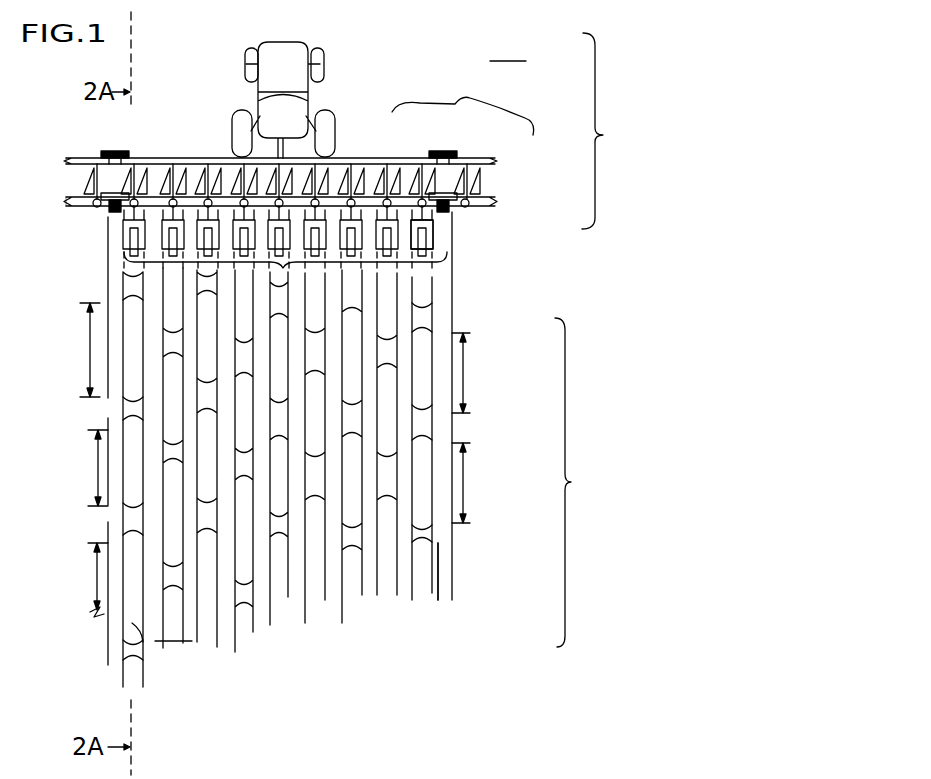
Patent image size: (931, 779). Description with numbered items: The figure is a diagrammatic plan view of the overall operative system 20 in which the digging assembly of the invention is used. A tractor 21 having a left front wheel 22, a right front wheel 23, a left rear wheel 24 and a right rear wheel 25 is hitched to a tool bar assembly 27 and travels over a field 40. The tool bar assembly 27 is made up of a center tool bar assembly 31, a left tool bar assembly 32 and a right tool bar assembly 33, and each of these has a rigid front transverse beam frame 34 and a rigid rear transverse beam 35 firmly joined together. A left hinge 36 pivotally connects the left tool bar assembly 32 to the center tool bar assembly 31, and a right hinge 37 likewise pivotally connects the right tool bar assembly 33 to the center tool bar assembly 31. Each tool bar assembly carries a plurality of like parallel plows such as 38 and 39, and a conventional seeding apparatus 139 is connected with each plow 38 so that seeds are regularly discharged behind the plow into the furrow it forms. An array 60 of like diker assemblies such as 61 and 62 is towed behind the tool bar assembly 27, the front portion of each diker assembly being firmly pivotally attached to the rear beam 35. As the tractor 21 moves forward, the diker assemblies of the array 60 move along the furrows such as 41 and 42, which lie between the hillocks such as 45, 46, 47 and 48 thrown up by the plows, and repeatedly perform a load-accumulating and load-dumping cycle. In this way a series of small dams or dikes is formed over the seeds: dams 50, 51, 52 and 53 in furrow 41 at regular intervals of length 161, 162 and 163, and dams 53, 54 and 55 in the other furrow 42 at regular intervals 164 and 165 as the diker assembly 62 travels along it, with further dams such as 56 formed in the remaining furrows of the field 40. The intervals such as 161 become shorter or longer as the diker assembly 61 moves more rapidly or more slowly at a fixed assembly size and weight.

The system 20 is at (611, 131).
The tractor 21 is at (314, 88).
The left front wheel 22 is at (246, 50).
The right front wheel 23 is at (320, 60).
The rear wheel 24 is at (238, 113).
The right rear wheel 25 is at (330, 126).
The tool bar assembly 27 is at (463, 105).
The center tool bar assembly 31 is at (292, 177).
The left tool bar assembly 32 is at (83, 154).
The right tool bar assembly 33 is at (294, 179).
The rigid front transverse beam frame 34 is at (220, 162).
The rigid rear transverse beam 35 is at (432, 209).
The left hinge 36 is at (110, 208).
The upper bracket 37 is at (458, 152).
The plow 38 is at (135, 166).
The plow 39 is at (415, 178).
The field 40 is at (548, 341).
The furrow 41 is at (132, 623).
The furrow 42 is at (473, 460).
The hillock 45 is at (289, 498).
The hillock 46 is at (201, 476).
The row marker 47 is at (437, 592).
The hillock 48 is at (408, 580).
The dam 50 is at (122, 287).
The dam 51 is at (127, 412).
The dam 52 is at (130, 530).
The dam 53 is at (125, 643).
The dam 54 is at (428, 427).
The dam 55 is at (427, 533).
The dam 56 is at (343, 558).
The array of diker assemblies 60 is at (283, 268).
The diker assembly 61 is at (125, 244).
The diker assembly 62 is at (432, 240).
The seeding apparatus 139 is at (106, 192).
The interval of length 161 is at (85, 355).
The interval of length 162 is at (95, 478).
The interval of length 163 is at (79, 580).
The interval of length 164 is at (465, 367).
The interval of length 165 is at (467, 473).